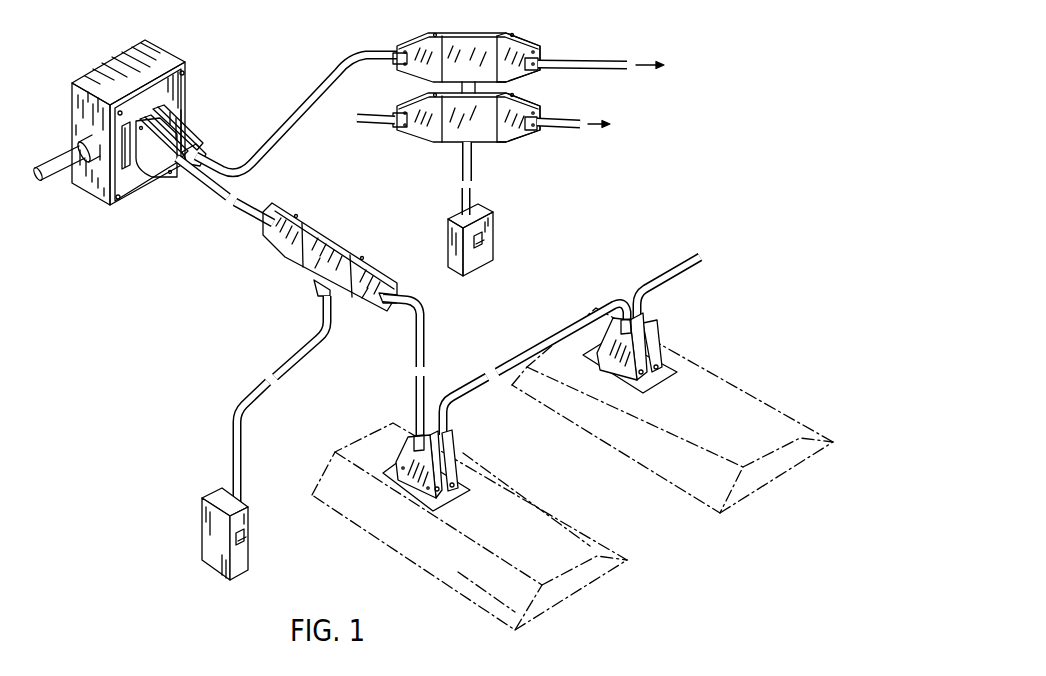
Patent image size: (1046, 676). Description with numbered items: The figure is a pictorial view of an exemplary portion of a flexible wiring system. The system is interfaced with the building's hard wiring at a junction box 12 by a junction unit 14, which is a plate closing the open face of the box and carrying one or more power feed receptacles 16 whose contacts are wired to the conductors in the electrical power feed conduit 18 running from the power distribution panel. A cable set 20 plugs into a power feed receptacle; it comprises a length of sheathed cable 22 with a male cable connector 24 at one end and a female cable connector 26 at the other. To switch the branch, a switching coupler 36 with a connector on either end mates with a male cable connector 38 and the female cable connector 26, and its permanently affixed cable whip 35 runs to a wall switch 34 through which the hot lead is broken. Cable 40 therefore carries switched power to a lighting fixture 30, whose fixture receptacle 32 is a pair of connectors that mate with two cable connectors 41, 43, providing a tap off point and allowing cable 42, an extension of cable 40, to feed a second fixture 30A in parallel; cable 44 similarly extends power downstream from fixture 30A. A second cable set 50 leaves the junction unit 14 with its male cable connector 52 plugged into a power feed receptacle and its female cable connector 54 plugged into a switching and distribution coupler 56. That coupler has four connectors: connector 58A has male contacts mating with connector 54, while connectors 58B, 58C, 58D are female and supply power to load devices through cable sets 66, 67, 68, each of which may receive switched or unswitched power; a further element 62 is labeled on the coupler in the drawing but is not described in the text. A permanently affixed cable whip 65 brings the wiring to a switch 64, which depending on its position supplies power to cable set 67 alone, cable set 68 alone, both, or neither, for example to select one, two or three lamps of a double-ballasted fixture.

The junction box 12 is at (168, 58).
The junction unit 14 is at (127, 197).
The power feed receptacle 16 is at (128, 170).
The electrical power feed conduit 18 is at (50, 170).
The cable set 20 is at (200, 206).
The cable 22 is at (223, 189).
The male cable connector 24 is at (170, 180).
The female cable connector 26 is at (278, 247).
The lighting fixture 30 is at (367, 533).
The fixture 30A is at (607, 447).
The fixture receptacle 32 is at (463, 487).
The wall switch 34 is at (202, 517).
The cable whip 35 is at (256, 393).
The switching coupler 36 is at (315, 270).
The male cable connector 38 is at (363, 311).
The cable 40 is at (425, 345).
The cable connector 41 is at (397, 450).
The cable 42 is at (515, 357).
The cable connector 43 is at (455, 450).
The cable 44 is at (677, 282).
The cable set 50 is at (278, 105).
The male cable connector 52 is at (195, 133).
The female cable connector 54 is at (406, 70).
The switching and distribution coupler 56 is at (486, 134).
The coupler connector 58A is at (399, 48).
The coupler connector 58B is at (512, 50).
The coupler connector 58C is at (483, 130).
The coupler connector 58D is at (437, 128).
The fitting 62 is at (412, 131).
The switch 64 is at (495, 238).
The cable whip 65 is at (459, 198).
The cable set 66 is at (588, 69).
The cable set 67 is at (372, 121).
The cable set 68 is at (555, 130).